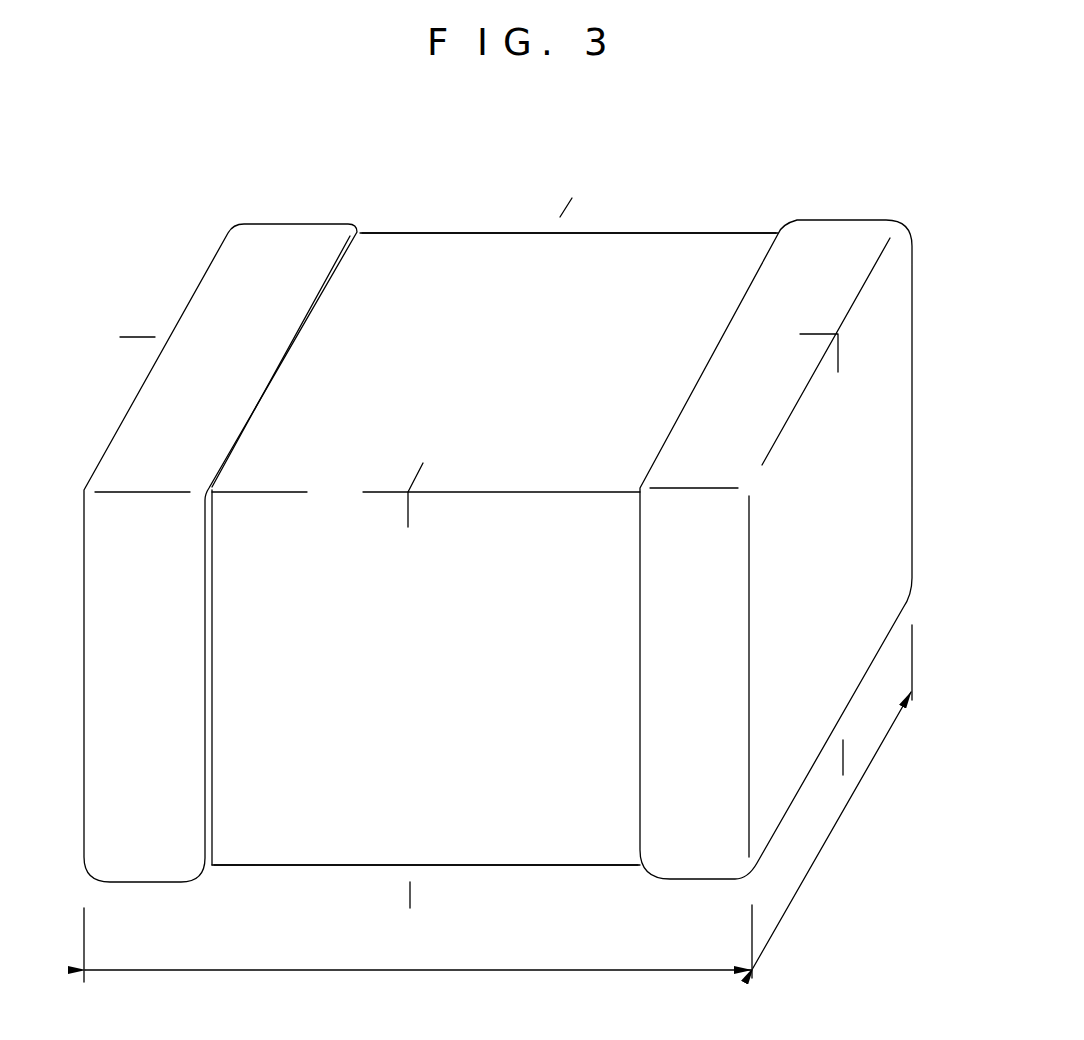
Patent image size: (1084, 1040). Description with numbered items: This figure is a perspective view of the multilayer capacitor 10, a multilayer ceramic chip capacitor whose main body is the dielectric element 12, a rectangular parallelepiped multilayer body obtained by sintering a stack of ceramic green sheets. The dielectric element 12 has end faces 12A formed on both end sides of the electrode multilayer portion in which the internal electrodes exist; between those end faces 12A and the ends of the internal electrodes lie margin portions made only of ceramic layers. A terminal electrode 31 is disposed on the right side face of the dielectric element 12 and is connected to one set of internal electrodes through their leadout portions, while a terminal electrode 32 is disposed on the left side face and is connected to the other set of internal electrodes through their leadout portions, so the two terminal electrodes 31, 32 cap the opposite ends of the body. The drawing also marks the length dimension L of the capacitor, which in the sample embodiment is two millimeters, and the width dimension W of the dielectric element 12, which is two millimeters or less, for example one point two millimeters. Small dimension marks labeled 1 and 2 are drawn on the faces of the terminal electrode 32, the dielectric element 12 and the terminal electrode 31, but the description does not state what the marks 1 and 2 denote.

The multilayer capacitor 10 is at (781, 155).
The dielectric element 12 is at (620, 265).
The end face 12A is at (470, 232).
The terminal electrode 31 is at (838, 236).
The terminal electrode 32 is at (286, 240).
The first position mark (thickness measurement) 1 is at (570, 209).
The second position mark 2 is at (128, 339).
The length dimension L is at (418, 943).
The width dimension W is at (832, 796).